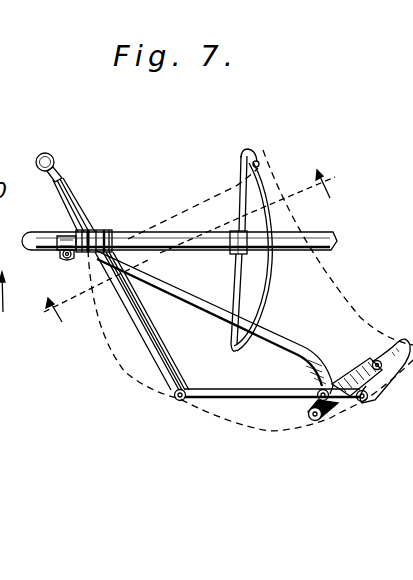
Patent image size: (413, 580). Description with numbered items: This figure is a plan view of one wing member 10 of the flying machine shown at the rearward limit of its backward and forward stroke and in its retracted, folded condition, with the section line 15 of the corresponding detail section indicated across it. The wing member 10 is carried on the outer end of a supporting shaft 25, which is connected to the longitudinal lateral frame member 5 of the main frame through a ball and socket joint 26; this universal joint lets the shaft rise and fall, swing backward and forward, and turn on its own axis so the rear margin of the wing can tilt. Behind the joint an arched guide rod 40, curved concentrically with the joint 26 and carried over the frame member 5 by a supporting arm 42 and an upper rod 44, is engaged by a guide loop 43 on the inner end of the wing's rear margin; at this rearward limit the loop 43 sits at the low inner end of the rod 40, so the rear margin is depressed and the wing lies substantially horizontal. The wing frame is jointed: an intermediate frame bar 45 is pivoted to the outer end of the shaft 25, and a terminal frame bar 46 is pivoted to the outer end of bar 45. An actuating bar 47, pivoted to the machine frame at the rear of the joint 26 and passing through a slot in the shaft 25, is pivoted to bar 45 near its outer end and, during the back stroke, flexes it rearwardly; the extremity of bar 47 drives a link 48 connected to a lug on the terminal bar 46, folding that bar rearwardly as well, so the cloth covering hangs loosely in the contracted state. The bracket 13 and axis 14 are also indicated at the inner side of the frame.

The lateral frame member 5 is at (121, 232).
The wing member 10 is at (275, 434).
The bracket 13 is at (38, 254).
The axis 14 is at (38, 296).
The aeroplane member 15 is at (190, 247).
The supporting shaft 25 is at (140, 332).
The ball and socket joint 26 is at (99, 230).
The guide rod 40 is at (270, 292).
The supporting arm 42 is at (234, 282).
The guide loop 43 is at (259, 160).
The upper rod 44 is at (244, 169).
The intermediate frame bar 45 is at (250, 399).
The terminal frame bar 46 is at (390, 379).
The actuating bar 47 is at (301, 352).
The link 48 is at (364, 357).